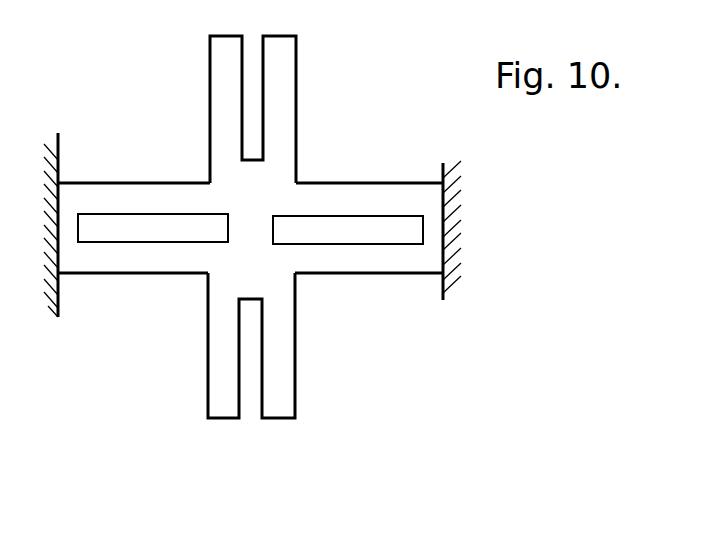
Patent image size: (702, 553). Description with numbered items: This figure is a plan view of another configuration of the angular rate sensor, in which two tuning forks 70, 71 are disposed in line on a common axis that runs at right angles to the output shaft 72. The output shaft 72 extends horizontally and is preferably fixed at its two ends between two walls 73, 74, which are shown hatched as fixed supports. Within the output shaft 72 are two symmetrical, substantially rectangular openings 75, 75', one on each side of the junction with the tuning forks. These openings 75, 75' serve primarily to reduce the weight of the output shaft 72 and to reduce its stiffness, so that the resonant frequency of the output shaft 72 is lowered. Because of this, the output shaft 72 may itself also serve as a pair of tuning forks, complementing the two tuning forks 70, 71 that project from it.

The tuning fork 70 is at (222, 115).
The tuning fork 71 is at (288, 400).
The output shaft 72 is at (341, 200).
The wall 73 is at (56, 261).
The wall 74 is at (446, 215).
The rectangular opening 75 is at (348, 275).
The rectangular opening 75' is at (153, 268).